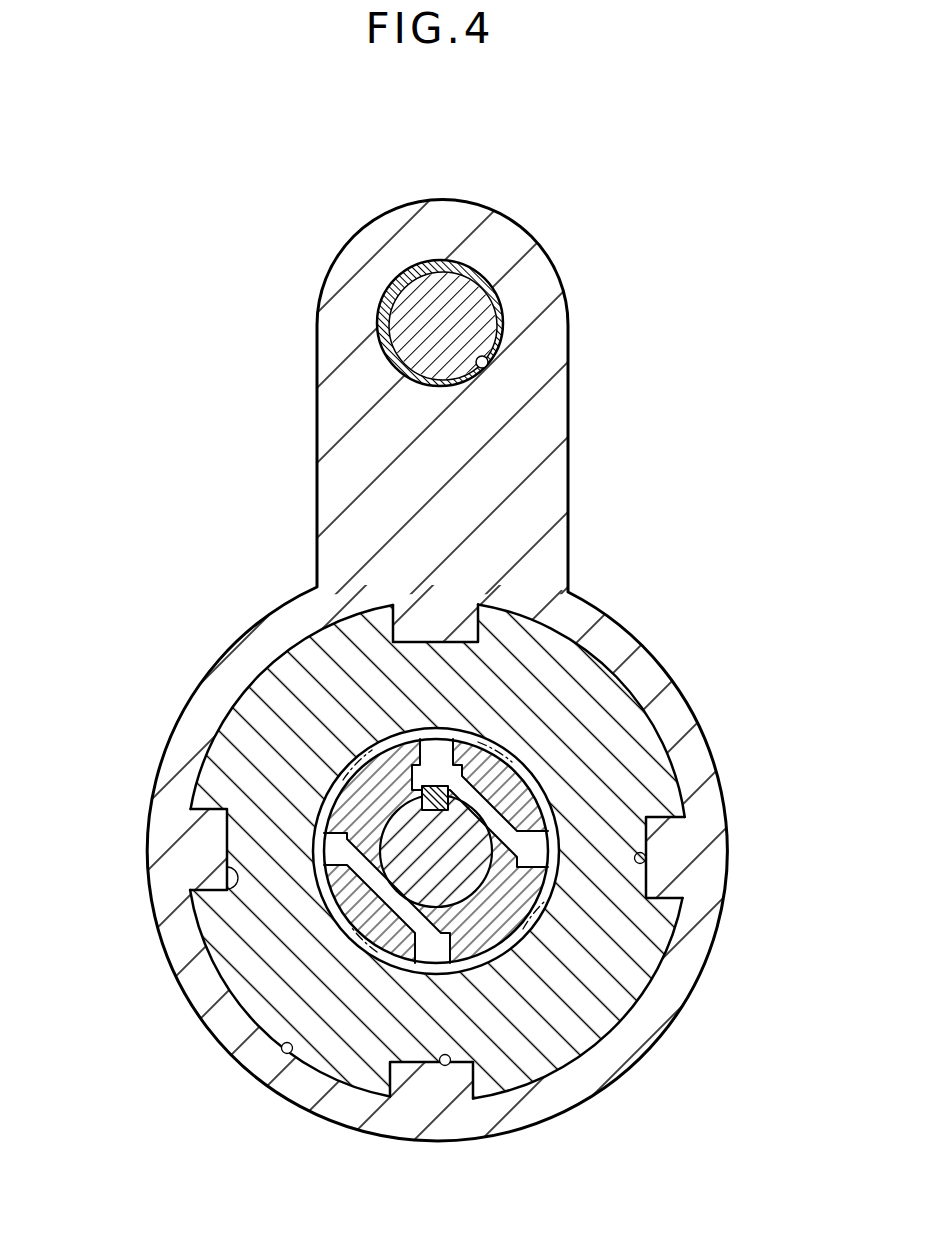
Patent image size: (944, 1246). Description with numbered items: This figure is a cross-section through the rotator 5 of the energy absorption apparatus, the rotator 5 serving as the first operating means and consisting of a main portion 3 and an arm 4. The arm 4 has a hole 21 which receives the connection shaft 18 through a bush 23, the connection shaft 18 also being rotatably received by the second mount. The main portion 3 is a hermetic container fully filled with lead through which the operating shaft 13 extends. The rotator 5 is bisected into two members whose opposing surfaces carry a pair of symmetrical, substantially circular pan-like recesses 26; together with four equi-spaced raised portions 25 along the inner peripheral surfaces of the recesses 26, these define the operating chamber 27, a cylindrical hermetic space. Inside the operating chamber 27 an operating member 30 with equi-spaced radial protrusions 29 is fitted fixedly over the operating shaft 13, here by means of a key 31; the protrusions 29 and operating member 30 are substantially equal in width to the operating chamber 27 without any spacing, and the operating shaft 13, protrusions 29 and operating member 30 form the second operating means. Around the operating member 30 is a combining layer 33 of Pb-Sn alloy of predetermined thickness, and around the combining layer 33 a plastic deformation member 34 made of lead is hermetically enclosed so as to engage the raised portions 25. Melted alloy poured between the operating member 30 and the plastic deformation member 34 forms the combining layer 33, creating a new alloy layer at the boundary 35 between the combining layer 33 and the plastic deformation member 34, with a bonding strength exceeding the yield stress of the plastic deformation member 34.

The main portion 3 is at (268, 630).
The arm 4 is at (428, 488).
The rotator 5 is at (412, 694).
The operating shaft 13 is at (449, 867).
The connection shaft 18 is at (457, 337).
The hole 21 is at (488, 368).
The bush 23 is at (500, 292).
The raised portions 25 is at (455, 643).
The recesses 26 is at (285, 1055).
The operating chamber 27 is at (400, 855).
The radial protrusions 29 is at (435, 740).
The operating member 30 is at (437, 849).
The key 31 is at (450, 790).
The combining layer 33 is at (380, 763).
The plastic deformation member 34 is at (268, 760).
The boundary 35 is at (318, 808).